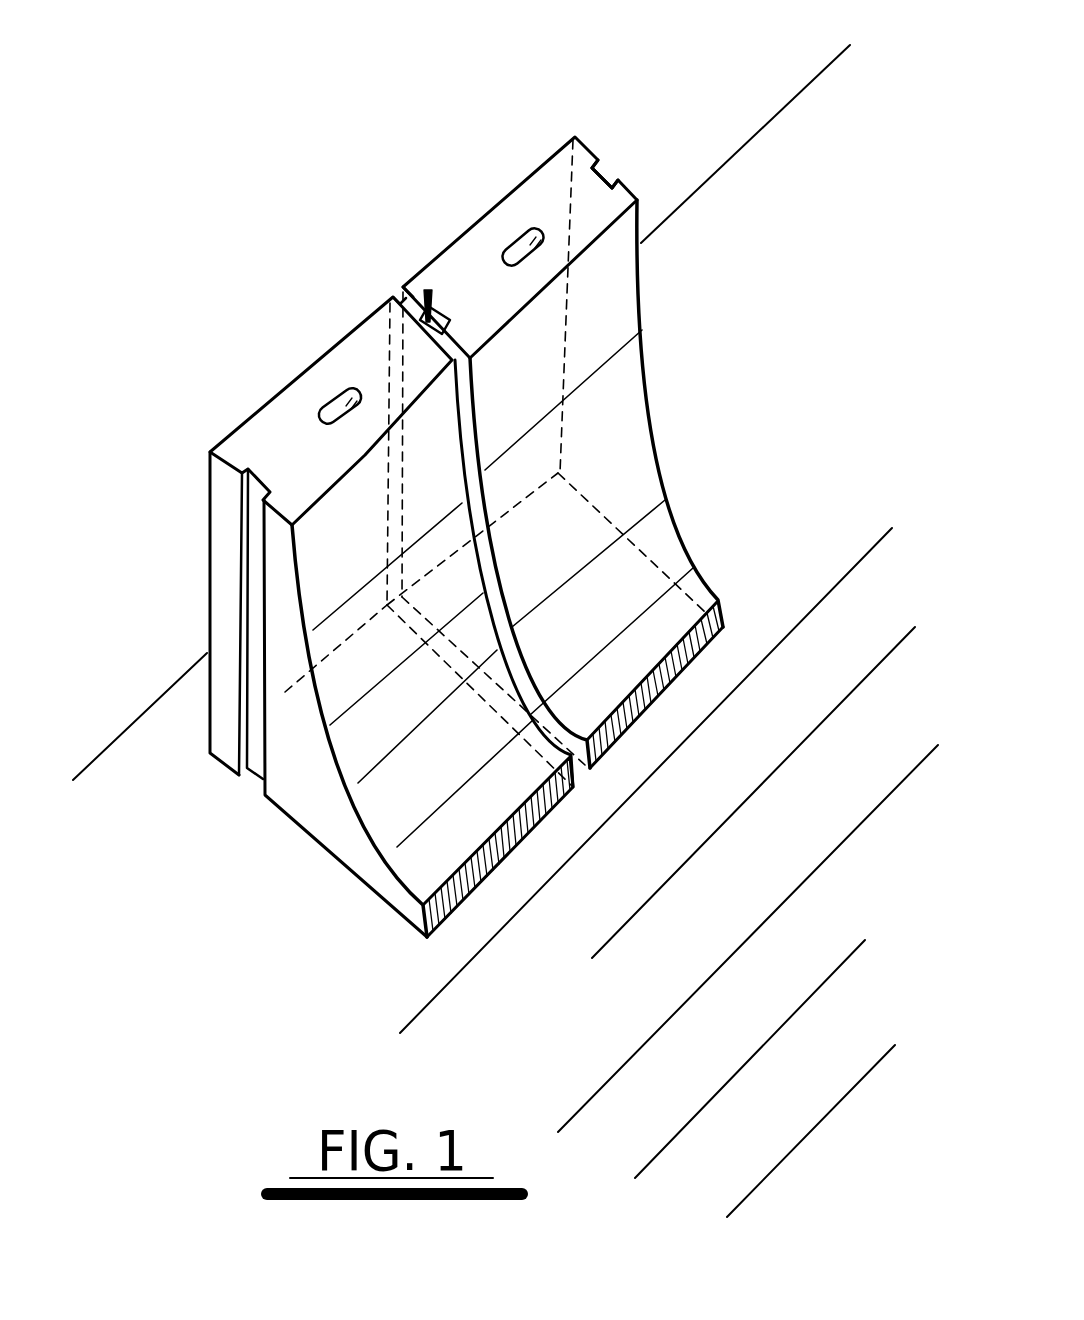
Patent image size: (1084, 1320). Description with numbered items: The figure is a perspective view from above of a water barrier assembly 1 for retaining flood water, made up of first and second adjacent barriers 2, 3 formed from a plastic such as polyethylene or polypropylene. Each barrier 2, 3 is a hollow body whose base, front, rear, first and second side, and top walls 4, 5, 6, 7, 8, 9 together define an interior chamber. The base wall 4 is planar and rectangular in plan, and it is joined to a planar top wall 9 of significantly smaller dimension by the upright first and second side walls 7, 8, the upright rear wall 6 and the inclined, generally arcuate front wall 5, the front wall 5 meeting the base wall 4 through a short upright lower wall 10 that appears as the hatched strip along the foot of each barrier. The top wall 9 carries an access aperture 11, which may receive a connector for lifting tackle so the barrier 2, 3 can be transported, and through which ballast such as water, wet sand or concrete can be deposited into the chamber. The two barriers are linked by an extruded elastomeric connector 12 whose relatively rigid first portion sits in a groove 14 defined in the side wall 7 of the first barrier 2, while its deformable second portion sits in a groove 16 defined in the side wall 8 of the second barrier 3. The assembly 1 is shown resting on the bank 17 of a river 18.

The water barrier assembly 1 is at (428, 504).
The first barrier 2 is at (562, 384).
The second barrier 3 is at (345, 652).
The base wall 4 is at (347, 873).
The front wall 5 is at (630, 478).
The rear wall 6 is at (212, 547).
The first side wall 7 is at (236, 703).
The second side wall 8 is at (625, 183).
The top wall 9 is at (270, 423).
The lower wall 10 is at (453, 917).
The access aperture 11 is at (343, 420).
The elastomeric connector 12 is at (428, 288).
The groove 14 is at (243, 600).
The groove 16 is at (602, 173).
The bank 17 is at (267, 1012).
The river 18 is at (800, 1005).